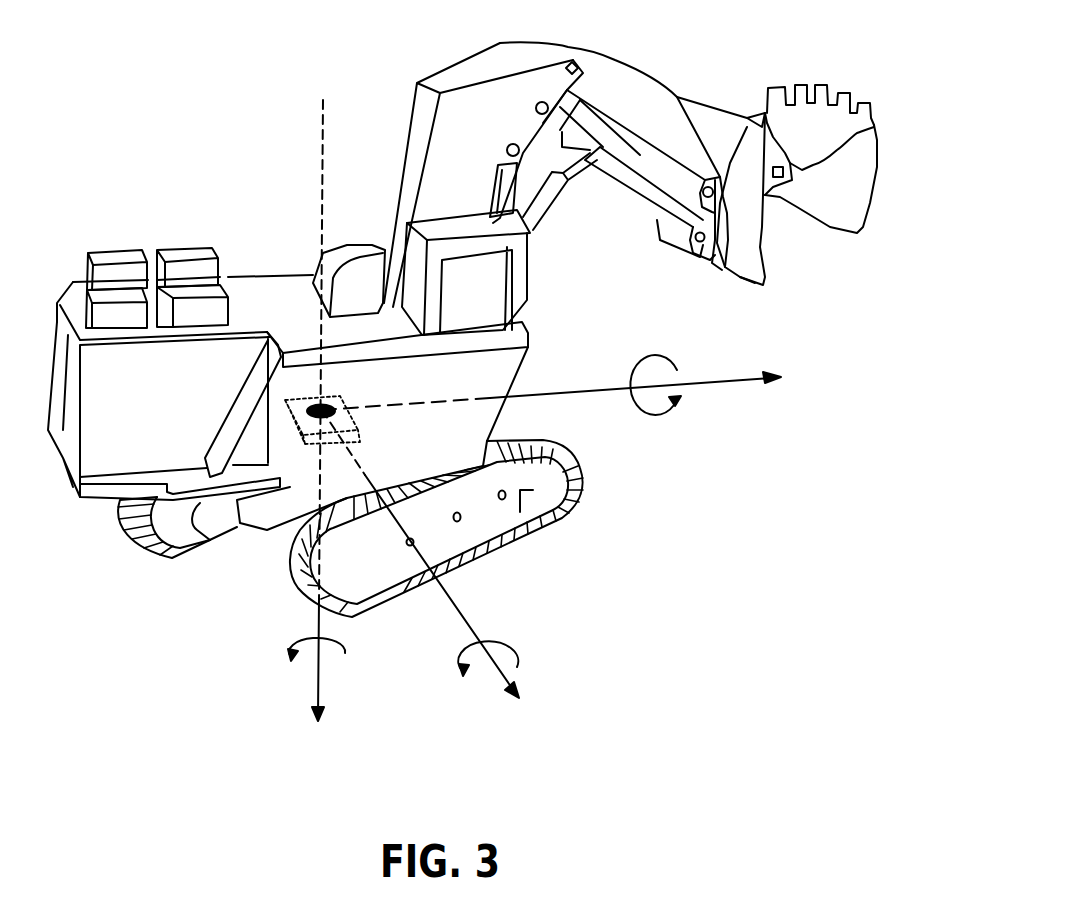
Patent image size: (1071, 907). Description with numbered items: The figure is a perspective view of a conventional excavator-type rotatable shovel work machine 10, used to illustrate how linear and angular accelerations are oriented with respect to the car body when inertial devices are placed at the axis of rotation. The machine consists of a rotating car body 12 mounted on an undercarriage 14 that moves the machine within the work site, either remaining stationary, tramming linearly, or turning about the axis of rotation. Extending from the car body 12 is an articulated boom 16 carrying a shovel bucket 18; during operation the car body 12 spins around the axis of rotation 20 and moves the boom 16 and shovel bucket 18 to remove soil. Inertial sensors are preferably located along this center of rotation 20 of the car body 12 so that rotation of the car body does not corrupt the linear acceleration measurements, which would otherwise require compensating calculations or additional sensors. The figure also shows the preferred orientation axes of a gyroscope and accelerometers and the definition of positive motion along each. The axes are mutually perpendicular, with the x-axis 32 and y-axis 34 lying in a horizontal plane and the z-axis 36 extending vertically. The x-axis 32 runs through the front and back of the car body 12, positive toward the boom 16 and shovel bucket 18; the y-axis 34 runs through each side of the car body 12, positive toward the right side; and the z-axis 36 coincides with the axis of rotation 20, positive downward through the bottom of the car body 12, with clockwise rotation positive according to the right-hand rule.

The rotatable shovel-type work machine 10 is at (155, 201).
The car body 12 is at (502, 368).
The undercarriage 14 is at (540, 498).
The articulated boom 16 is at (490, 53).
The shovel bucket 18 is at (755, 228).
The axis of rotation 20 is at (323, 127).
The x-axis 32 is at (747, 377).
The y-axis 34 is at (463, 612).
The z-axis 36 is at (317, 688).